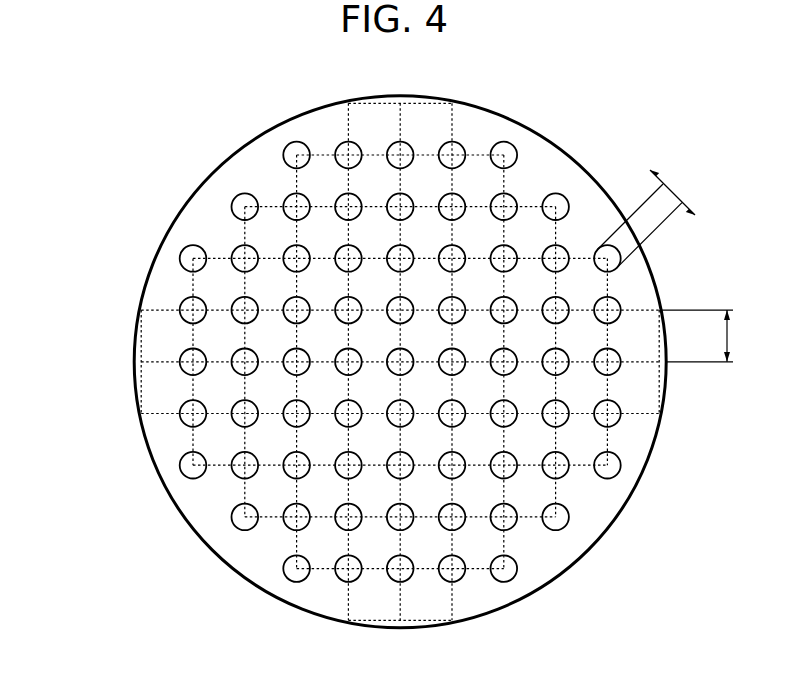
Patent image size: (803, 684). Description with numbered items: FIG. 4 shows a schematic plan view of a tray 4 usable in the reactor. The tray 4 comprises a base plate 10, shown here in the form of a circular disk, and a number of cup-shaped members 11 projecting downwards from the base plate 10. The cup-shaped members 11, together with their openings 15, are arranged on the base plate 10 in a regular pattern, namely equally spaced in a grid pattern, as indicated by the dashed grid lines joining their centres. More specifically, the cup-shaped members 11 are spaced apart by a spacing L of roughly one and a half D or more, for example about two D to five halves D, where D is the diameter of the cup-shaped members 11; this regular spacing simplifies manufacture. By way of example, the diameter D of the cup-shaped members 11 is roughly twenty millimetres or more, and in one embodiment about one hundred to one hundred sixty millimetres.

The tray 4 is at (127, 259).
The base plate 10 is at (548, 163).
The cup-shaped members 11 is at (343, 143).
The openings 15 is at (292, 574).